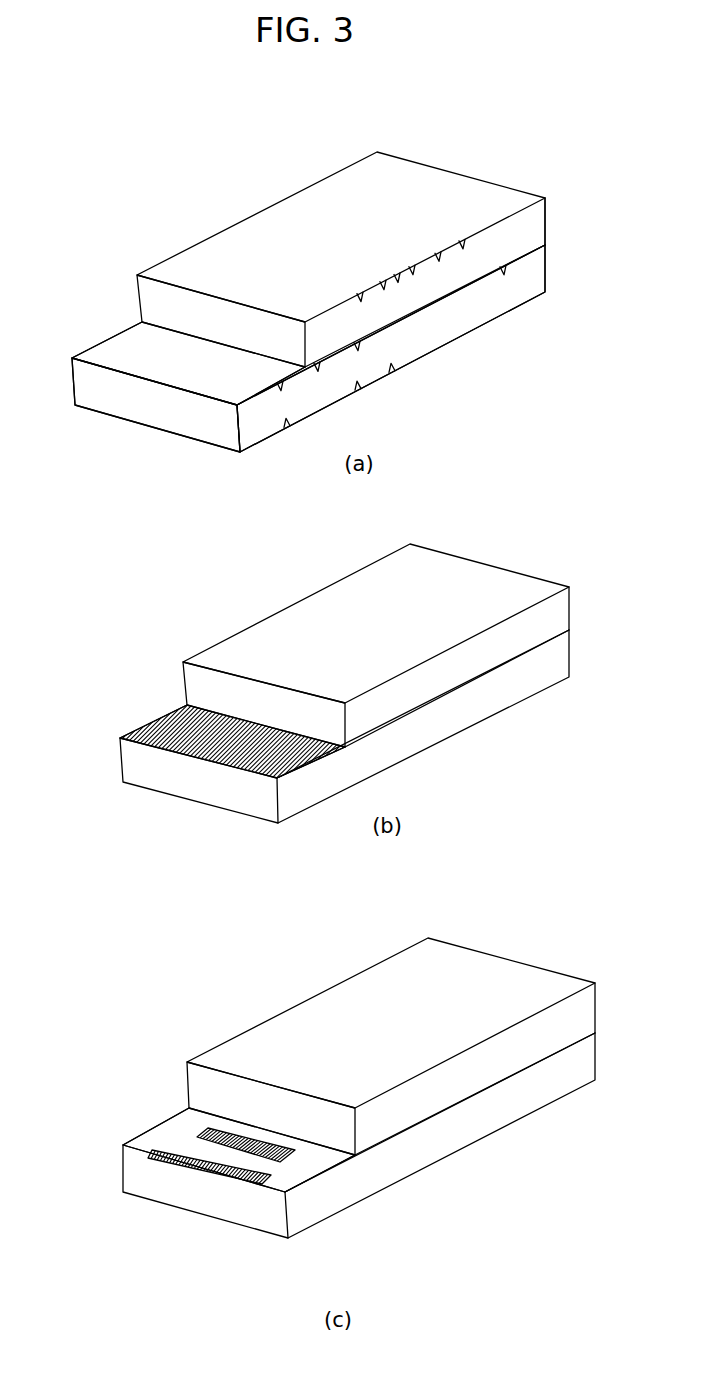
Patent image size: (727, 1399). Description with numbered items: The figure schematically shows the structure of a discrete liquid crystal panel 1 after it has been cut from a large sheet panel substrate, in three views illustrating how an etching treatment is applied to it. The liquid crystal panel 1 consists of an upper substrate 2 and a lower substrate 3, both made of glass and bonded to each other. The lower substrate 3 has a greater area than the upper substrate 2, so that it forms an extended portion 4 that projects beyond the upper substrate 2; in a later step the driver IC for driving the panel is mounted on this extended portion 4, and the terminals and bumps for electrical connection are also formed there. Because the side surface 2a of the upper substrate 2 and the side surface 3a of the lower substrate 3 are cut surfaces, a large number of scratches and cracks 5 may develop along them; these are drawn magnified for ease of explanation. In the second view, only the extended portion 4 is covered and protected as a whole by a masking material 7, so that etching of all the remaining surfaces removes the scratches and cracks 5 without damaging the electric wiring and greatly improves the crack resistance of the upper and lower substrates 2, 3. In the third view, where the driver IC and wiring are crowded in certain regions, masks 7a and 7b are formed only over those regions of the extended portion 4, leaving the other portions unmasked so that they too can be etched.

The liquid crystal panel 1 is at (204, 172).
The upper substrate 2 is at (349, 230).
The side surface of the upper substrate 2a is at (513, 228).
The lower substrate 3 is at (408, 352).
The side surface of the lower substrate 3a is at (185, 412).
The extended portion 4 is at (128, 343).
The scratches and cracks 5 is at (462, 240).
The masking material 7 is at (170, 735).
The mask 7a is at (208, 1128).
The mask 7b is at (205, 1172).